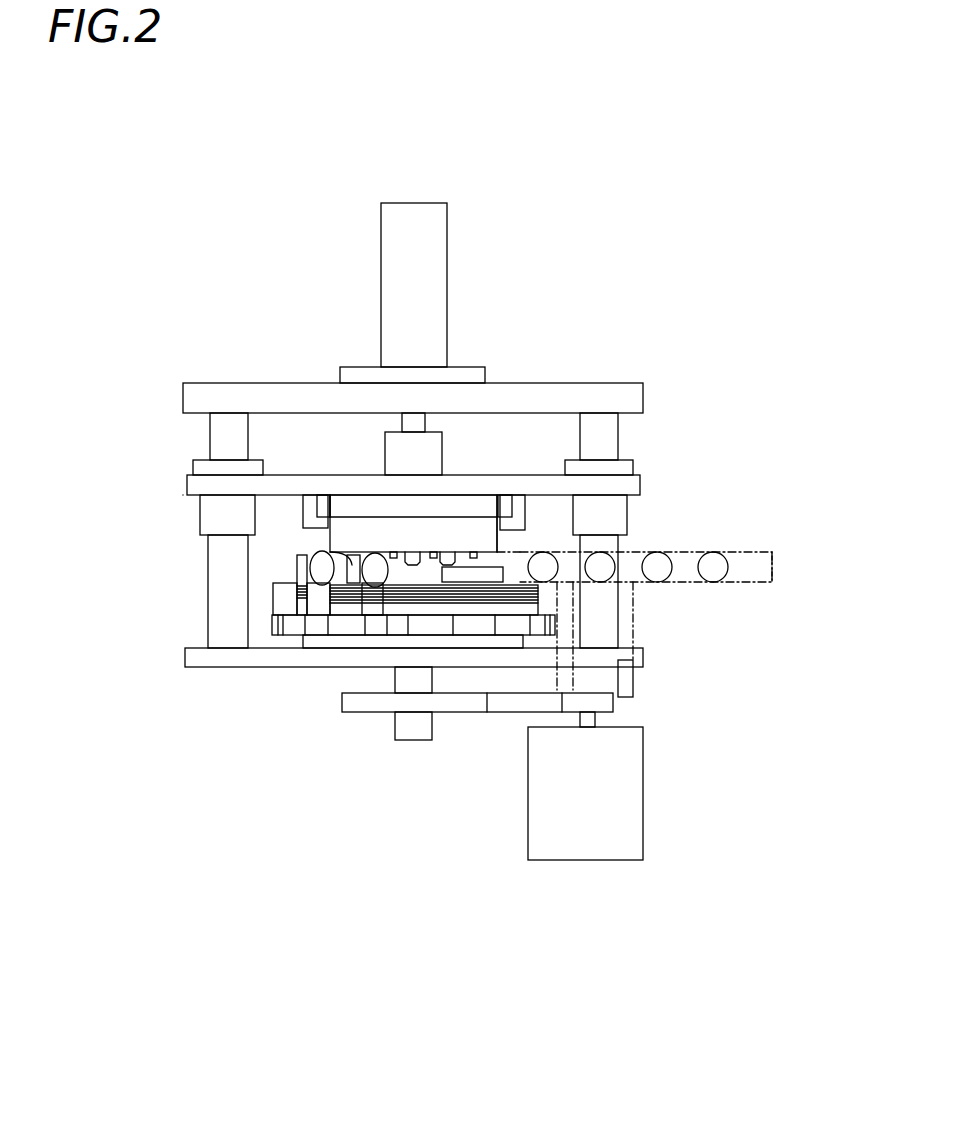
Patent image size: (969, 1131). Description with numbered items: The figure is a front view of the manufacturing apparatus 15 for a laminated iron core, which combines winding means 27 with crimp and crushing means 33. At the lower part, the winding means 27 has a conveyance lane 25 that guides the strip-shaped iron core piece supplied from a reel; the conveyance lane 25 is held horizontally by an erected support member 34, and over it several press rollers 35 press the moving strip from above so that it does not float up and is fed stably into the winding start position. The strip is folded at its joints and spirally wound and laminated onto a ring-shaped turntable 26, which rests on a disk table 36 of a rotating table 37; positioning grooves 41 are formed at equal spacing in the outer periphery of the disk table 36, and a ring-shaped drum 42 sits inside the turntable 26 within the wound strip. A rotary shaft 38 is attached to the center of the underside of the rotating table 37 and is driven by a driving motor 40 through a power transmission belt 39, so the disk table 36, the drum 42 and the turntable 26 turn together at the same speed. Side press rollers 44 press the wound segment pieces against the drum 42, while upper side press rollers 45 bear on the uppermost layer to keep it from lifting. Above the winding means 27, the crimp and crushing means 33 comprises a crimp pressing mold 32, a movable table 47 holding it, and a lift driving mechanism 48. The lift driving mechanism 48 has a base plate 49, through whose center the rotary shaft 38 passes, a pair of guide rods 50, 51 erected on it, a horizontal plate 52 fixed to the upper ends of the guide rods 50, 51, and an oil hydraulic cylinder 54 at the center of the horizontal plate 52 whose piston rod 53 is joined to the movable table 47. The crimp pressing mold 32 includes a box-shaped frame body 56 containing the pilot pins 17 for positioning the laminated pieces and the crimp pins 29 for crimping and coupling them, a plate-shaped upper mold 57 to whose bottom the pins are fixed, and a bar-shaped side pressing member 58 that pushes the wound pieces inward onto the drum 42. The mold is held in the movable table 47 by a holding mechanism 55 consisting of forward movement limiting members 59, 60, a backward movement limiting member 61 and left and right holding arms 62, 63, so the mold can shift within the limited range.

The manufacturing apparatus 15 is at (208, 195).
The lift driving mechanism 48 is at (478, 195).
The crimp and crushing means 33 is at (190, 278).
The oil hydraulic cylinder 54 is at (413, 262).
The piston rod 53 is at (410, 425).
The horizontal plate 52 is at (205, 395).
The guide rod 50 is at (225, 440).
The guide rod 51 is at (605, 440).
The movable table 47 is at (205, 485).
The backward movement limiting member 61 is at (357, 510).
The upper mold 57 is at (352, 508).
The forward movement limiting member 59 is at (312, 490).
The holding arm 62 is at (308, 513).
The holding arm 63 is at (513, 522).
The box-shaped frame body 56 is at (350, 530).
The side pressing member 58 is at (455, 560).
The pilot pin 17 is at (413, 560).
The crimp pin 29 is at (435, 560).
The forward movement limiting member 60 is at (475, 560).
The holding mechanism 55 is at (532, 502).
The crimp pressing mold 32 is at (507, 540).
The press roller 35 is at (715, 565).
The conveyance lane 25 is at (753, 582).
The turntable 26 is at (527, 608).
The side press roller 44 is at (285, 599).
The drum 42 is at (348, 578).
The positioning groove 41 is at (375, 572).
The upper side press roller 45 is at (382, 622).
The disk table 36 is at (273, 628).
The rotating table 37 is at (298, 655).
The base plate 49 is at (200, 658).
The rotary shaft 38 is at (413, 727).
The power transmission belt 39 is at (512, 703).
The driving motor 40 is at (588, 825).
The support member 34 is at (575, 648).
The winding means 27 is at (458, 820).